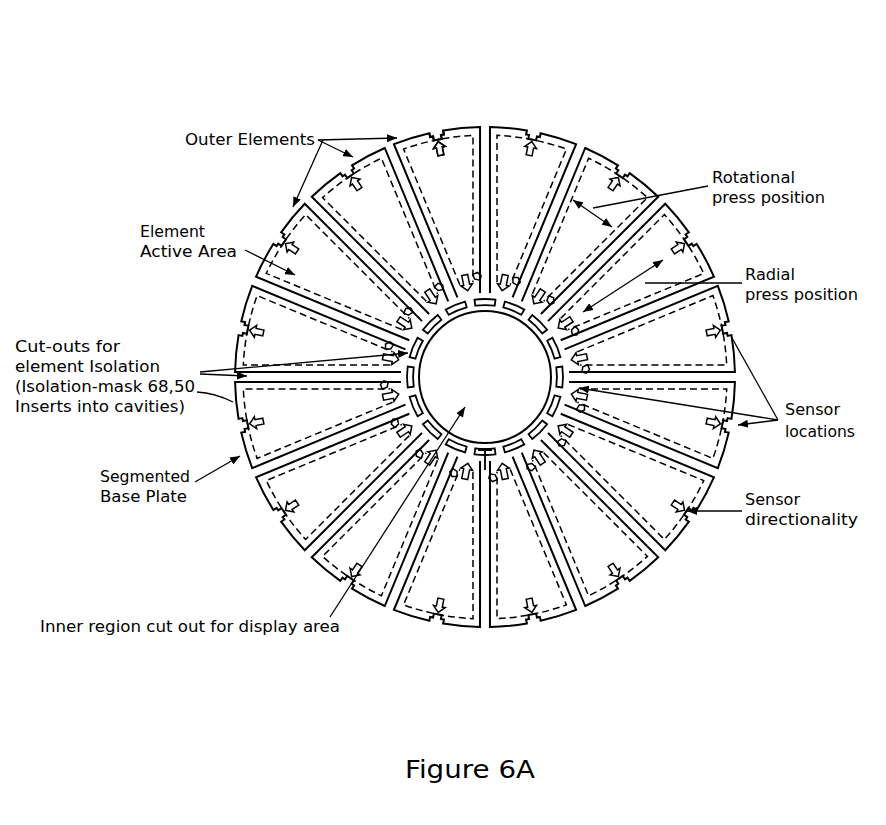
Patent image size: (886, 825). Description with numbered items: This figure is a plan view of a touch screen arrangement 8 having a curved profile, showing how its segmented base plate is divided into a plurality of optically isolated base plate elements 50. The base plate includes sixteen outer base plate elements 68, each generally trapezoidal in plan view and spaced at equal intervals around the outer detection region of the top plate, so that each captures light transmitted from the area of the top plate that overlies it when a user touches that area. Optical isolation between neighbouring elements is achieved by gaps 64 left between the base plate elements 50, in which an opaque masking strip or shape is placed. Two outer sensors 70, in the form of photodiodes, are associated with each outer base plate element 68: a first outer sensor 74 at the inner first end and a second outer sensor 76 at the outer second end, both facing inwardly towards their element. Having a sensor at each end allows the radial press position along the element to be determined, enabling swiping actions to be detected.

The touch screen arrangement 8 is at (662, 78).
The base plate elements 50 is at (375, 160).
The outer base plate elements 68 is at (479, 378).
The gaps 64 is at (485, 470).
The outer sensors 70 is at (432, 130).
The first outer sensor 74 is at (489, 284).
The second outer sensor 76 is at (446, 126).